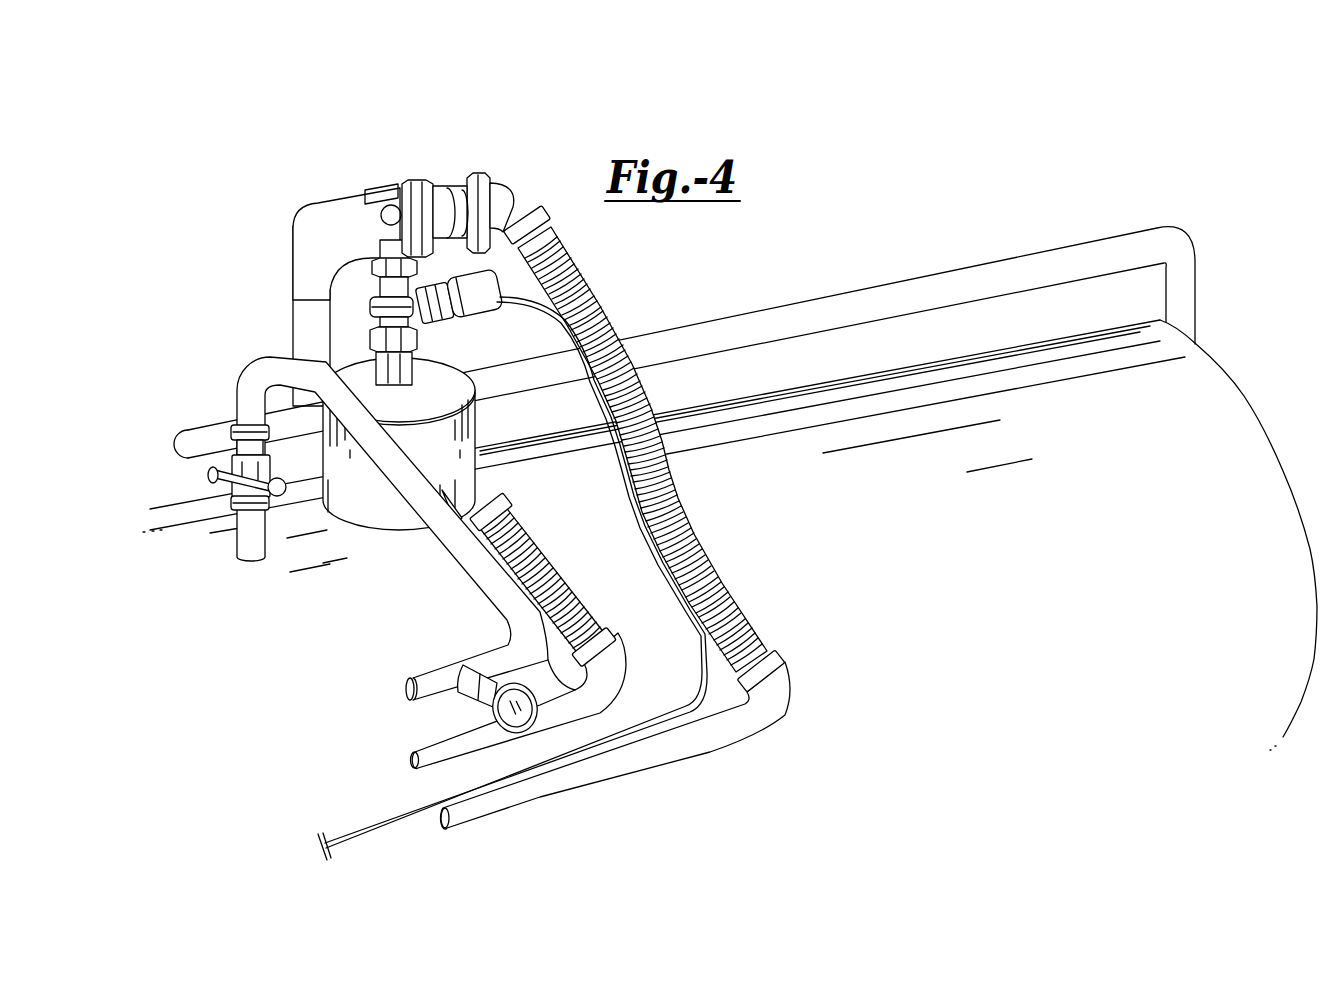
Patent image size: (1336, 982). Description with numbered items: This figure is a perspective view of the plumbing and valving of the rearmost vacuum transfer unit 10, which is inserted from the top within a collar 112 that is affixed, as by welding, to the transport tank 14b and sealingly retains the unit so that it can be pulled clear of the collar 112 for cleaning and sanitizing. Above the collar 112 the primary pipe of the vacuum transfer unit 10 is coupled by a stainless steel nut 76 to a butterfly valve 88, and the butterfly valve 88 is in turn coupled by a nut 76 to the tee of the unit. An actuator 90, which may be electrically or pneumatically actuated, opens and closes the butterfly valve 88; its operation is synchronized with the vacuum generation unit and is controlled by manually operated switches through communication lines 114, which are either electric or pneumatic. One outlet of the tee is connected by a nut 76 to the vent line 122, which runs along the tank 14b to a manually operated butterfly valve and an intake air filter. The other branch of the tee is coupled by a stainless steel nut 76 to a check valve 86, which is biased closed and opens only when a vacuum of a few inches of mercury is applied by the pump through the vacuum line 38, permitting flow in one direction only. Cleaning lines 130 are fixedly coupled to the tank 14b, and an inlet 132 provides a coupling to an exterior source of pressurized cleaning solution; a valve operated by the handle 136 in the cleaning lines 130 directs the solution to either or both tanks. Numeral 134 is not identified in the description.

The vacuum transfer unit 10 is at (330, 180).
The transport tank 14b is at (830, 380).
The vacuum line 38 is at (711, 752).
The stainless steel nut 76 is at (413, 183).
The check valve 86 is at (441, 185).
The butterfly valve 88 is at (370, 300).
The actuator 90 is at (460, 317).
The collar 112 is at (480, 422).
The communication lines 114 is at (697, 675).
The vent line 122 is at (745, 315).
The cleaning lines 130 is at (230, 543).
The inlet 132 is at (487, 713).
The valve 134 is at (232, 463).
The valve handle 136 is at (232, 499).